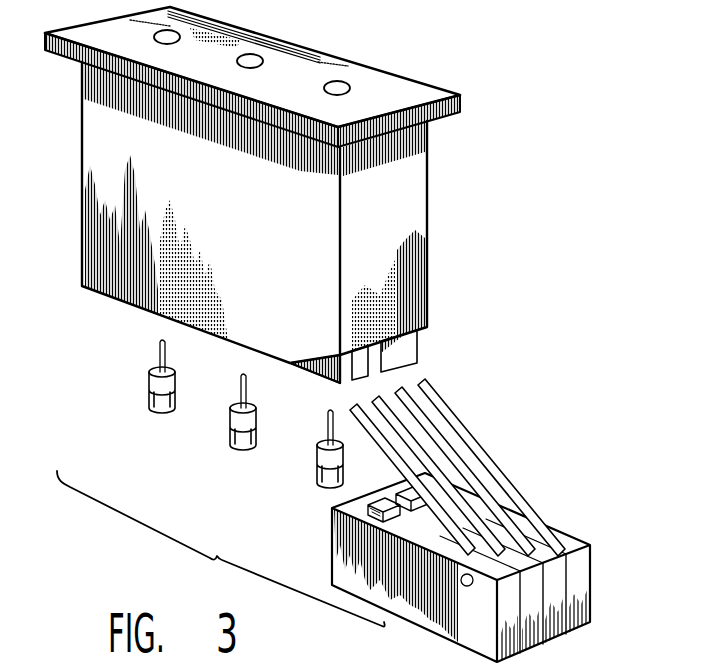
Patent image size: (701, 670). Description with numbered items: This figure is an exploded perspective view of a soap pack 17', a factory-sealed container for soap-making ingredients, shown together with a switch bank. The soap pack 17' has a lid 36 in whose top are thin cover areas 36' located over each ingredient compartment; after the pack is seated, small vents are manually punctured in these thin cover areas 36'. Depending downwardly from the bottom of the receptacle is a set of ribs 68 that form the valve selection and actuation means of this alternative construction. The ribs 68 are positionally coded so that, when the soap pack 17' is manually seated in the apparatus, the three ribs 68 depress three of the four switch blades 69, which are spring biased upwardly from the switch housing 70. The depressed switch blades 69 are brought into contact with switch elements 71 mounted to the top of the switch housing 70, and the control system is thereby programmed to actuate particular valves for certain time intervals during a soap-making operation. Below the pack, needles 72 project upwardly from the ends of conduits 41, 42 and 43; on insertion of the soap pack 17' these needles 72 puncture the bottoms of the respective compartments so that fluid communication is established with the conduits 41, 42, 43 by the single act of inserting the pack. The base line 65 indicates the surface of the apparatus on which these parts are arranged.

The soap pack 17' is at (274, 205).
The lid 36 is at (252, 77).
The thin cover areas 36' is at (275, 62).
The ribs 68 is at (356, 381).
The needles 72 is at (238, 378).
The conduit 43 is at (147, 398).
The conduit 42 is at (229, 425).
The conduit 41 is at (316, 465).
The base plate 65 is at (221, 570).
The switch housing 70 is at (592, 580).
The switch elements 71 is at (388, 493).
The switch blades 69 is at (437, 472).